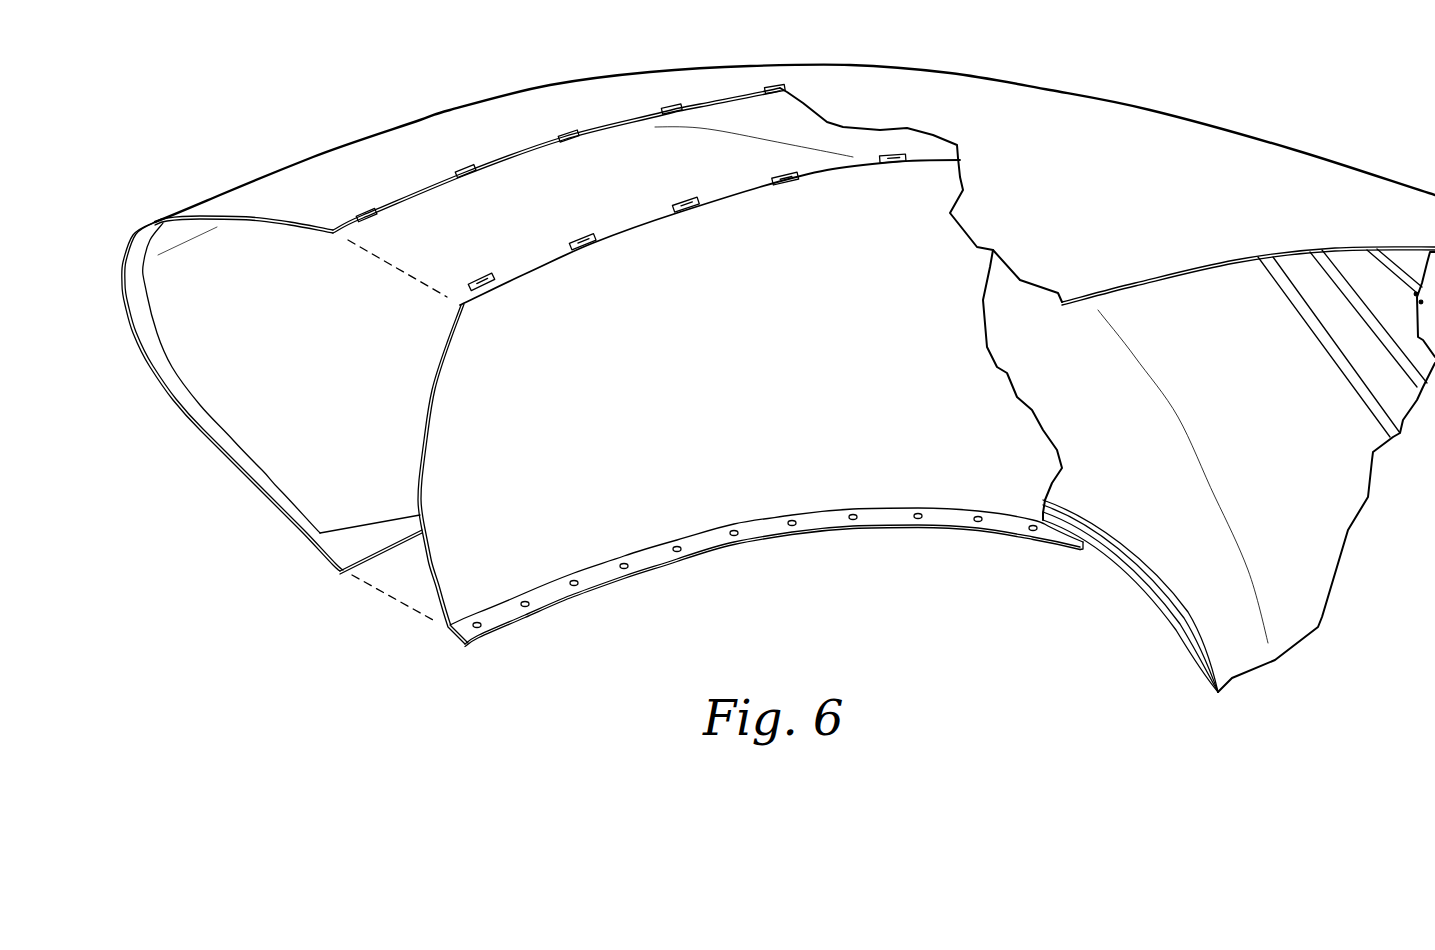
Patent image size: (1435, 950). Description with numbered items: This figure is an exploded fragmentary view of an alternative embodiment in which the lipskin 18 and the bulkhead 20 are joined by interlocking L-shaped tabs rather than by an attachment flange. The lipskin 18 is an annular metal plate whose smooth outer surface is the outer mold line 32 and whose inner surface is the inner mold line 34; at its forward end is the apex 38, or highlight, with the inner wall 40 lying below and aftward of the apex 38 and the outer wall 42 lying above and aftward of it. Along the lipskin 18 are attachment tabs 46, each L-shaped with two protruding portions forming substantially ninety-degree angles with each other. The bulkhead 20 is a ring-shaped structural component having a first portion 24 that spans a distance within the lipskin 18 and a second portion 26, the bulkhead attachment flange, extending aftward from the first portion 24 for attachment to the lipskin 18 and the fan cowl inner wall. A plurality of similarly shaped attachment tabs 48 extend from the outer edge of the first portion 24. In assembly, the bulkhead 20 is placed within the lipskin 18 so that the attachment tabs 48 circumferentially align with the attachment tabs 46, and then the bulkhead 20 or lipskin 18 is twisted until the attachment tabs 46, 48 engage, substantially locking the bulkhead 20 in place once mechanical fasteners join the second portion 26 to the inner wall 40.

The lipskin 18 is at (138, 143).
The bulkhead 20 is at (695, 337).
The first portion of the bulkhead 24 is at (993, 408).
The second portion of the bulkhead (bulkhead attachment flange) 26 is at (950, 520).
The outer mold line (OML) 32 is at (301, 369).
The inner mold line (IML) 34 is at (290, 226).
The apex 38 is at (123, 262).
The inner wall 40 is at (365, 547).
The outer wall 42 is at (221, 215).
The attachment tabs 46 is at (563, 137).
The attachment tabs 48 is at (586, 240).